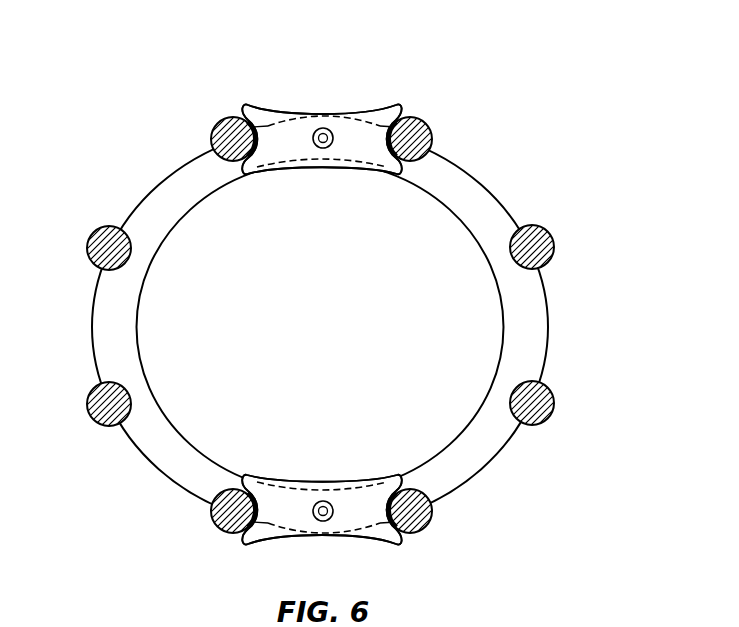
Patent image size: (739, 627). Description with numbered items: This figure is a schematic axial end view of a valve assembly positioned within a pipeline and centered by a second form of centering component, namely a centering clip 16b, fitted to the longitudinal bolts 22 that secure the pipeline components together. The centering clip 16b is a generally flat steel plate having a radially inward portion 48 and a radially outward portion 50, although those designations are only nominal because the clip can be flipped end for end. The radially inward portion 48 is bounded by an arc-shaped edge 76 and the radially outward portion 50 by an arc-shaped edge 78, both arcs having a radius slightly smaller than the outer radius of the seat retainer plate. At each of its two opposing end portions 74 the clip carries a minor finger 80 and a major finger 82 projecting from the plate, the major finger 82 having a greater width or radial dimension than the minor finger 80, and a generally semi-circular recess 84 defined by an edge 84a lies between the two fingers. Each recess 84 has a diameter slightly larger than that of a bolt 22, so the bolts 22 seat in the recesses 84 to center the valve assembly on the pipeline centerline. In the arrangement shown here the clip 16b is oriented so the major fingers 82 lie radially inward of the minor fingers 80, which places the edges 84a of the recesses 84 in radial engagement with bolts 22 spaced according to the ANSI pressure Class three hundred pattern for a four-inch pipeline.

The centering clip 16b is at (331, 108).
The bolt 22 is at (216, 123).
The radially inward portion 48 is at (343, 161).
The radially outward portion 50 is at (303, 120).
The end portion 74 is at (246, 106).
The arc-shaped edge 76 is at (290, 170).
The arc-shaped edge 78 is at (278, 105).
The minor finger 80 is at (251, 107).
The major finger 82 is at (247, 177).
The recess 84 is at (214, 131).
The edge 84a is at (211, 139).